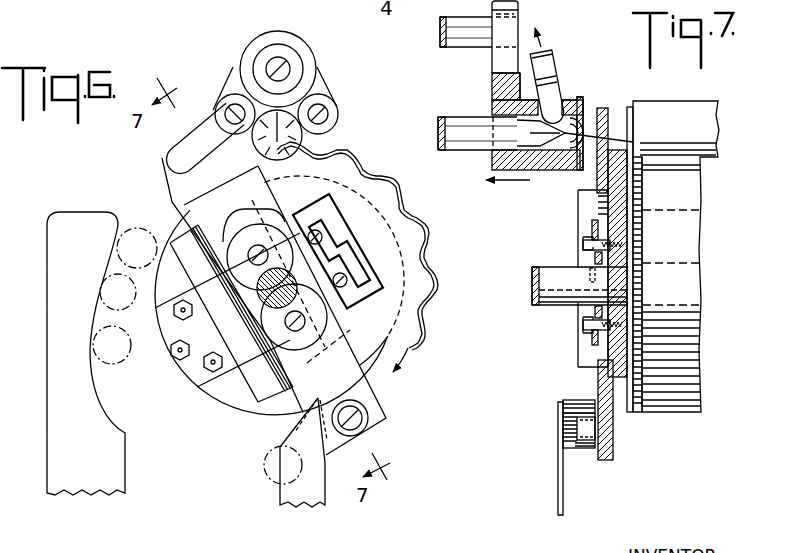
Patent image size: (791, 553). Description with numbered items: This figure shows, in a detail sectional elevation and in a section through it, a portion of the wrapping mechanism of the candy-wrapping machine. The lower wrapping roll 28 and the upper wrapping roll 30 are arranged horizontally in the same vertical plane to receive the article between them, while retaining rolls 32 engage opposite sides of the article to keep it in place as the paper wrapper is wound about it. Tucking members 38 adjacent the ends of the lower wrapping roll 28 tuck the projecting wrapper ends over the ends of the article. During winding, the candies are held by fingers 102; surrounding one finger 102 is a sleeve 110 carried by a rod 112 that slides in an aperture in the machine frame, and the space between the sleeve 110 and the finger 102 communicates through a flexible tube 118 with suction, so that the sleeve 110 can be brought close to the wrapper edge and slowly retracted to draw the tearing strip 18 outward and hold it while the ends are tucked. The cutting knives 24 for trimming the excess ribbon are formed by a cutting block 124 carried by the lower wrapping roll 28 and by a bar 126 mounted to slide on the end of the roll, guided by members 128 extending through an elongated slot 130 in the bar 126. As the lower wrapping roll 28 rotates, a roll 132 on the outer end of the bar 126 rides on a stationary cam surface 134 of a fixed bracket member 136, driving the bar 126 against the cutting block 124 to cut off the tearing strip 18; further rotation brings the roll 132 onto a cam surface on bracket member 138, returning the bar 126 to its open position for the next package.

In FIG. 7, the tearing strip 18 is at (616, 136).
In FIG. 6, the cutting knives 24 is at (190, 186).
In FIG. 6, the lower wrapping roll 28 is at (222, 386).
In FIG. 7, the lower wrapping roll 28 is at (690, 231).
In FIG. 6, the upper wrapping roll 30 is at (258, 42).
In FIG. 6, the retaining rolls 32 is at (222, 102).
In FIG. 6, the tucking members 38 is at (388, 185).
In FIG. 7, the tucking members 38 is at (620, 181).
In FIG. 7, the fingers 102 is at (520, 192).
In FIG. 7, the sleeve 110 is at (556, 95).
In FIG. 7, the rod 112 is at (460, 44).
In FIG. 7, the flexible tube 118 is at (548, 46).
In FIG. 6, the cutting block 124 is at (252, 178).
In FIG. 7, the cutting block 124 is at (648, 283).
In FIG. 6, the bar 126 is at (178, 147).
In FIG. 7, the bar 126 is at (600, 107).
In FIG. 6, the guiding members 128 is at (288, 330).
In FIG. 7, the guiding members 128 is at (592, 230).
In FIG. 6, the elongated slot 130 is at (227, 232).
In FIG. 7, the elongated slot 130 is at (600, 206).
In FIG. 6, the roll 132 is at (368, 414).
In FIG. 7, the roll 132 is at (590, 449).
In FIG. 6, the stationary cam surface 134 is at (293, 426).
In FIG. 7, the stationary cam surface 134 is at (573, 403).
In FIG. 6, the fixed bracket member 136 is at (282, 500).
In FIG. 7, the fixed bracket member 136 is at (557, 480).
In FIG. 6, the bracket member 138 is at (72, 222).